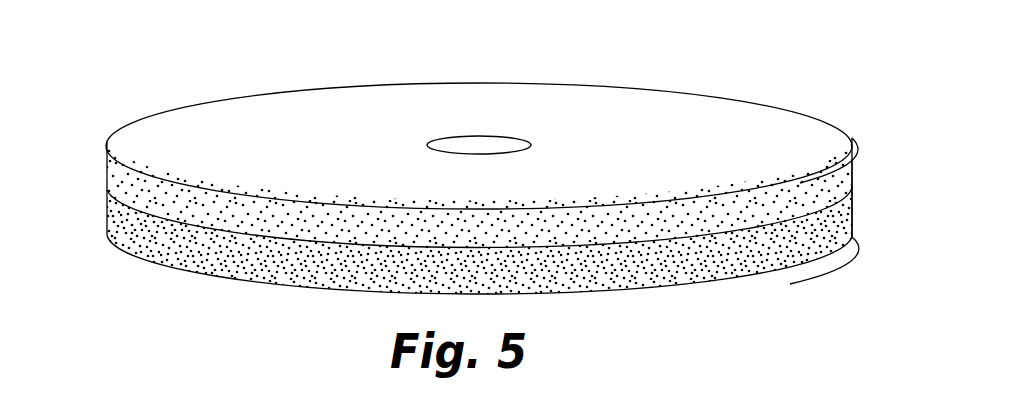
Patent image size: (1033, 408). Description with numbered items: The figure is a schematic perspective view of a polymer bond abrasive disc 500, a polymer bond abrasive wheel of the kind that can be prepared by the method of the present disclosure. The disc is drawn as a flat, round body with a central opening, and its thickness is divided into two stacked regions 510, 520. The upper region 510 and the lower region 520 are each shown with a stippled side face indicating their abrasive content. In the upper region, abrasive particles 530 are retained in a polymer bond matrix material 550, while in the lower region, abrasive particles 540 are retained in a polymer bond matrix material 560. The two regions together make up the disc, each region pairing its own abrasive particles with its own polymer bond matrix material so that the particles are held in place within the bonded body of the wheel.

The polymer bond abrasive disc 500 is at (262, 31).
The region 510 is at (89, 156).
The region 520 is at (88, 223).
The abrasive particles 530 is at (835, 168).
The polymer bond matrix material 550 is at (842, 185).
The polymer bond matrix material 560 is at (847, 216).
The abrasive particles 540 is at (818, 257).